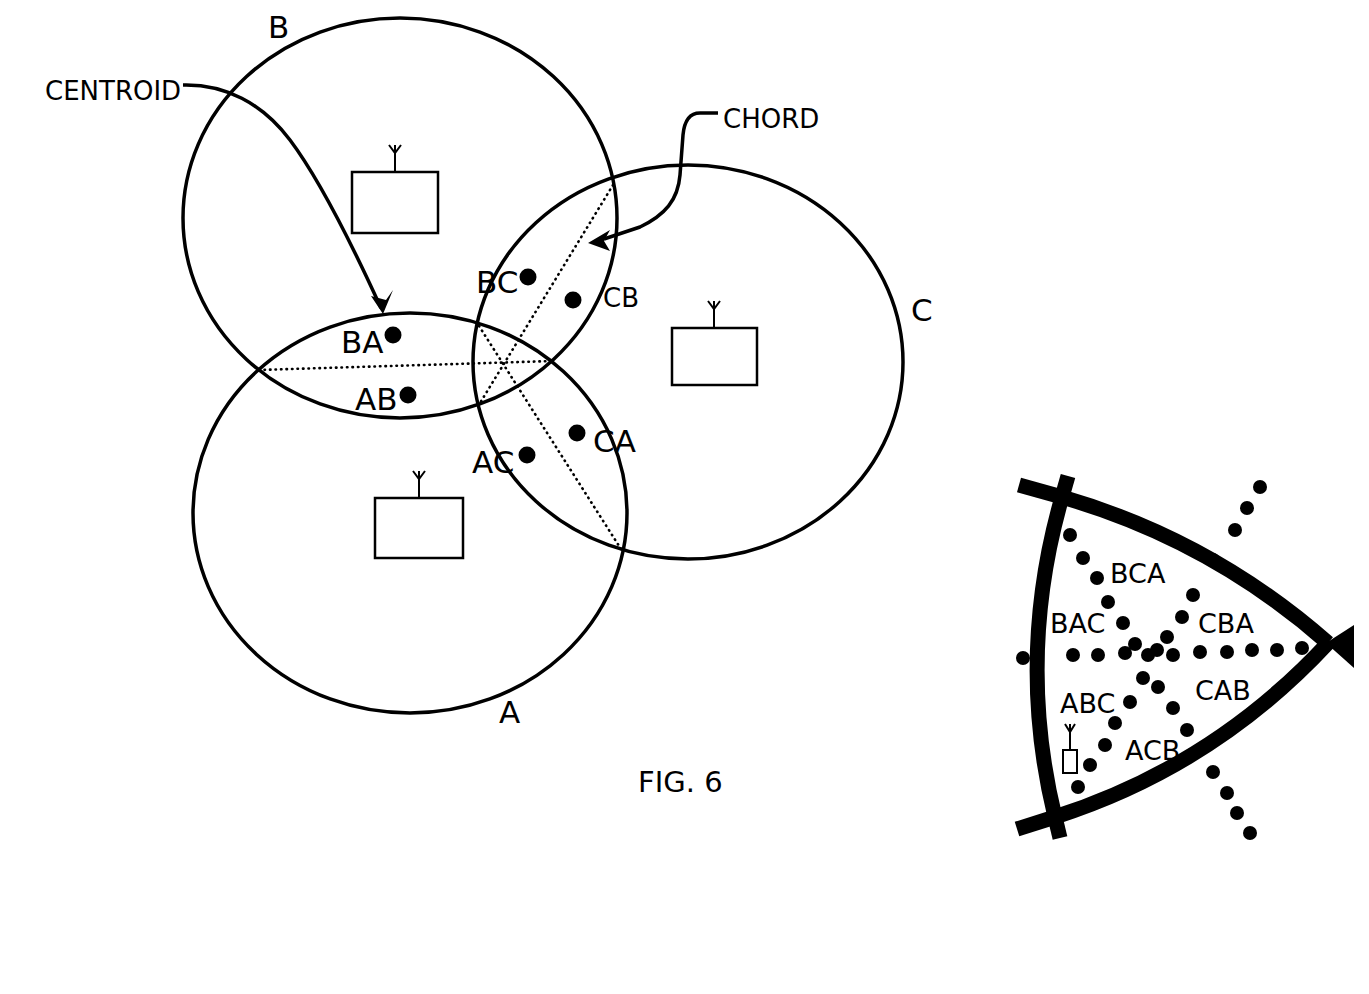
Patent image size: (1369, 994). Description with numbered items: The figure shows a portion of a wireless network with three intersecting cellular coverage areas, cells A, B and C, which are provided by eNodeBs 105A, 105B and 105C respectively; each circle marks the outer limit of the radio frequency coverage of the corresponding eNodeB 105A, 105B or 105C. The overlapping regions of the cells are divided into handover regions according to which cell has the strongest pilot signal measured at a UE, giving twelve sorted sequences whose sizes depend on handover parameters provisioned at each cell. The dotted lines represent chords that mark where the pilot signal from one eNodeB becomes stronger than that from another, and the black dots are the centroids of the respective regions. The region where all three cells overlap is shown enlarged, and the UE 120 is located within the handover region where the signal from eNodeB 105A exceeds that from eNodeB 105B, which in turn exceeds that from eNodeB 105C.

The eNodeB 105A is at (451, 540).
The eNodeB 105B is at (426, 214).
The eNodeB 105C is at (746, 368).
The UE 120 is at (1037, 743).